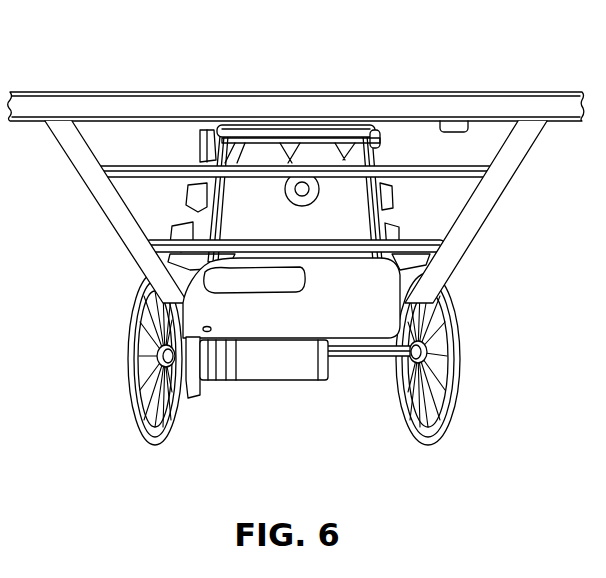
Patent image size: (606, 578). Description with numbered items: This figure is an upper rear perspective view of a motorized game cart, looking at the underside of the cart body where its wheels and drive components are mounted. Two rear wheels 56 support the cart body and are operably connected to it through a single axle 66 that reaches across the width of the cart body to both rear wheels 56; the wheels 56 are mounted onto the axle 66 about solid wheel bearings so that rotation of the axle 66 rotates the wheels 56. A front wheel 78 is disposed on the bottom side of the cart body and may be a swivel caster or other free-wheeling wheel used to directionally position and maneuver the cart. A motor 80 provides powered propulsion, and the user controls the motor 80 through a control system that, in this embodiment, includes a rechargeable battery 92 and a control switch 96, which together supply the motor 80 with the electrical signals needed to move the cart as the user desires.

The rear wheel 56 is at (100, 322).
The axle 66 is at (363, 377).
The front wheel 78 is at (343, 128).
The motor 80 is at (268, 372).
The rechargeable battery 92 is at (360, 280).
The control switch 96 is at (467, 127).